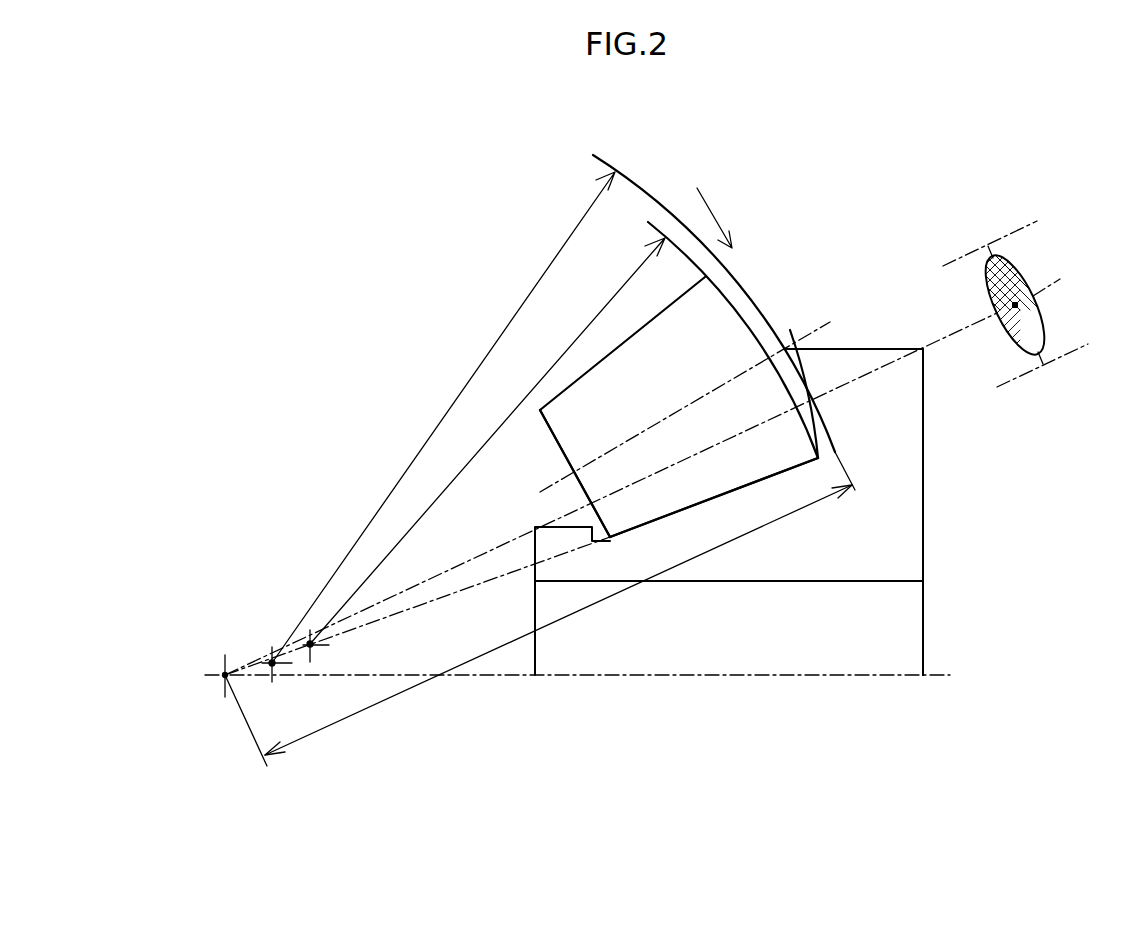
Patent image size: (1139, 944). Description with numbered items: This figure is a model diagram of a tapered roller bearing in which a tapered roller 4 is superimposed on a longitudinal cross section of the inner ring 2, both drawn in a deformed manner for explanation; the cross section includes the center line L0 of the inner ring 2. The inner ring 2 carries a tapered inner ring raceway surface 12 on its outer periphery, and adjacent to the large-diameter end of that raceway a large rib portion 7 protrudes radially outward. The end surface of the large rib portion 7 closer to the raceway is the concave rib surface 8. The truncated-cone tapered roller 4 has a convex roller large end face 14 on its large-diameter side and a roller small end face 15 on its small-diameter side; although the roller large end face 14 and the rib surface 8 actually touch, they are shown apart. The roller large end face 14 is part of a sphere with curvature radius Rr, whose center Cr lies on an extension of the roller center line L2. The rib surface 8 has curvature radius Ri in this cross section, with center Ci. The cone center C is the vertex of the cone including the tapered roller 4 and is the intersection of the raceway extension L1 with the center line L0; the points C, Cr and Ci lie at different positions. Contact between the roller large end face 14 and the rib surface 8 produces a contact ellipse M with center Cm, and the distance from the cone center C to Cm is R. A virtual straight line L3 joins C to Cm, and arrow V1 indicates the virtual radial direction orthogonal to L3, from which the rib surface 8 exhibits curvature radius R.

The inner ring 2 is at (940, 528).
The tapered roller 4 is at (578, 437).
The large rib portion 7 is at (892, 403).
The rib surface 8 is at (820, 424).
The inner ring raceway surface 12 is at (682, 504).
The roller large end face 14 is at (738, 305).
The roller small end face 15 is at (580, 497).
The cone center C is at (223, 673).
The center of the rib surface Ci is at (273, 666).
The center of the roller large end face Cr is at (313, 645).
The center of the contact ellipse Cm is at (1018, 307).
The contact ellipse M is at (1040, 270).
The distance from the cone center to the center of the contact ellipse R is at (540, 609).
The curvature radius of the rib surface Ri is at (443, 417).
The curvature radius of the roller large end face Rr is at (487, 441).
The center line of the inner ring L0 is at (630, 677).
The extension of the inner ring raceway surface L1 is at (413, 609).
The center line of the tapered roller L2 is at (681, 410).
The virtual straight line L3 is at (413, 587).
The arrow indicating the virtual radial direction V1 is at (729, 218).